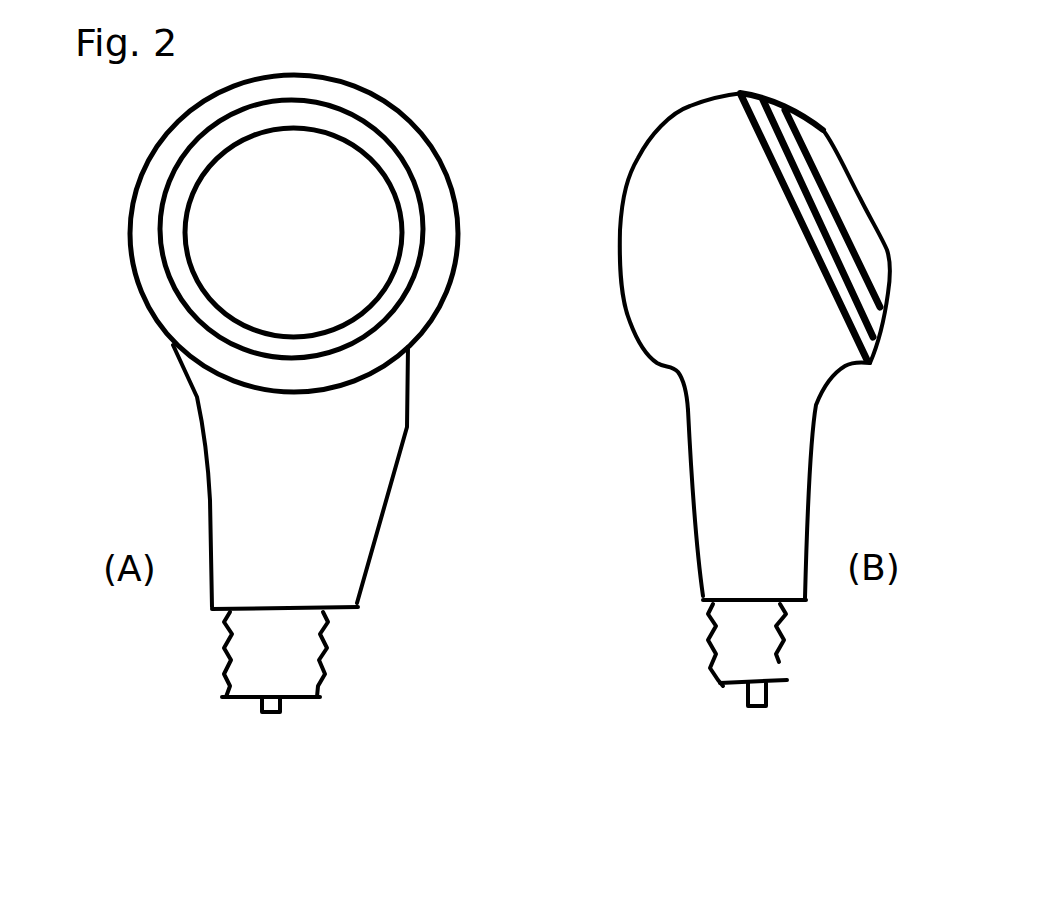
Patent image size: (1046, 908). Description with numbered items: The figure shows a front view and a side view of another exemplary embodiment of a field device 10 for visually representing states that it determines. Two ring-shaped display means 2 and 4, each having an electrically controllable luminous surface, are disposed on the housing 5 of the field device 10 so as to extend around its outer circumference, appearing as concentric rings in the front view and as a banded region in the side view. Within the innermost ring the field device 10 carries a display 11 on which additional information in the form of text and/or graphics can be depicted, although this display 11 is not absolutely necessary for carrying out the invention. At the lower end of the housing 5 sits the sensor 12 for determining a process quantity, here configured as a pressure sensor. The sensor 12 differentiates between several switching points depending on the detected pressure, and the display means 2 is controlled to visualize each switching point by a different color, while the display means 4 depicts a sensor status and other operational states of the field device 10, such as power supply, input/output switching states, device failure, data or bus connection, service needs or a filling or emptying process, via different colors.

The display means 2 is at (418, 160).
The display means 4 is at (348, 135).
The housing 5 is at (380, 428).
The field device 10 is at (590, 605).
The display 11 is at (315, 251).
The sensor 12 is at (283, 705).